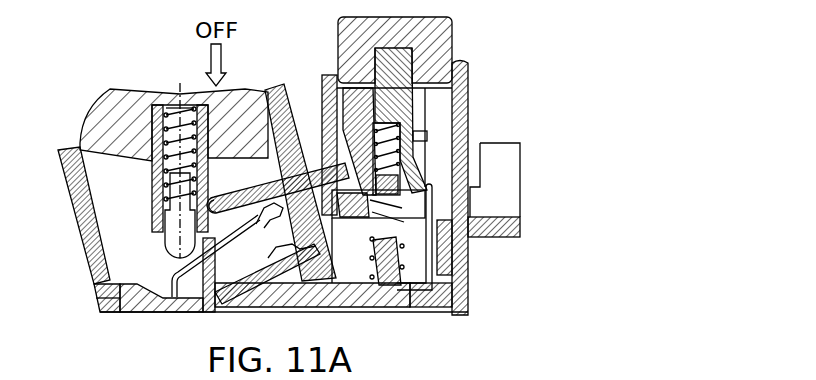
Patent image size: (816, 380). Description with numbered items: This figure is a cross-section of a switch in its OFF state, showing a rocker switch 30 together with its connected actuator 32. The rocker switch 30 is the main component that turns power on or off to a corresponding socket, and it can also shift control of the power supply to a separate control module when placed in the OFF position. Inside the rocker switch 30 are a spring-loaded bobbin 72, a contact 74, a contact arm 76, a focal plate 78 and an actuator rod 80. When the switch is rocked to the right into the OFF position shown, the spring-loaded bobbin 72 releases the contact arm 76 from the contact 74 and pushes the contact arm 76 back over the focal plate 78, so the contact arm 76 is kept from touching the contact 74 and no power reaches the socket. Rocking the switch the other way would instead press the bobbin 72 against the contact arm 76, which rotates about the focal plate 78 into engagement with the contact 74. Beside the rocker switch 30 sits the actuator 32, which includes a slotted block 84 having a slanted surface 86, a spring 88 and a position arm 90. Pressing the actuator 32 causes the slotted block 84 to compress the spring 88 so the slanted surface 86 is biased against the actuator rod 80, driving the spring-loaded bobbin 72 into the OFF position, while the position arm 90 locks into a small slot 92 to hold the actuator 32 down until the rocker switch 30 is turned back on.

The rocker switch 30 is at (88, 104).
The actuator 32 is at (452, 28).
The spring-loaded bobbin 72 is at (130, 218).
The contact 74 is at (283, 255).
The contact arm 76 is at (168, 277).
The focal plate 78 is at (182, 313).
The actuator rod 80 is at (257, 183).
The slotted block 84 is at (395, 58).
The slanted surface 86 is at (372, 157).
The spring 88 is at (387, 128).
The position arm 90 is at (433, 258).
The small slot 92 is at (422, 137).